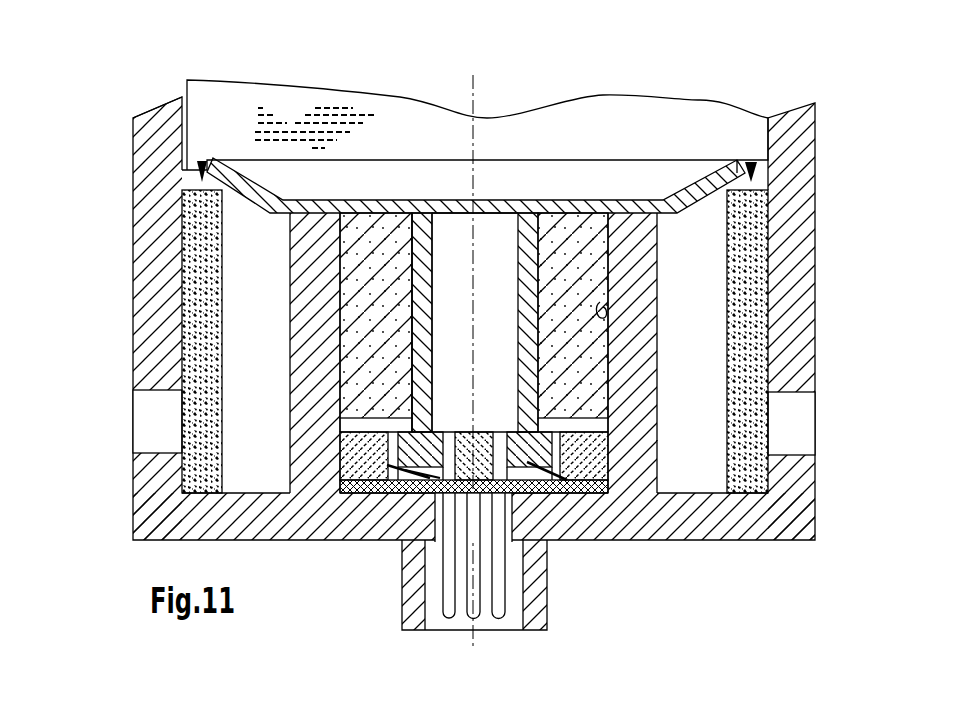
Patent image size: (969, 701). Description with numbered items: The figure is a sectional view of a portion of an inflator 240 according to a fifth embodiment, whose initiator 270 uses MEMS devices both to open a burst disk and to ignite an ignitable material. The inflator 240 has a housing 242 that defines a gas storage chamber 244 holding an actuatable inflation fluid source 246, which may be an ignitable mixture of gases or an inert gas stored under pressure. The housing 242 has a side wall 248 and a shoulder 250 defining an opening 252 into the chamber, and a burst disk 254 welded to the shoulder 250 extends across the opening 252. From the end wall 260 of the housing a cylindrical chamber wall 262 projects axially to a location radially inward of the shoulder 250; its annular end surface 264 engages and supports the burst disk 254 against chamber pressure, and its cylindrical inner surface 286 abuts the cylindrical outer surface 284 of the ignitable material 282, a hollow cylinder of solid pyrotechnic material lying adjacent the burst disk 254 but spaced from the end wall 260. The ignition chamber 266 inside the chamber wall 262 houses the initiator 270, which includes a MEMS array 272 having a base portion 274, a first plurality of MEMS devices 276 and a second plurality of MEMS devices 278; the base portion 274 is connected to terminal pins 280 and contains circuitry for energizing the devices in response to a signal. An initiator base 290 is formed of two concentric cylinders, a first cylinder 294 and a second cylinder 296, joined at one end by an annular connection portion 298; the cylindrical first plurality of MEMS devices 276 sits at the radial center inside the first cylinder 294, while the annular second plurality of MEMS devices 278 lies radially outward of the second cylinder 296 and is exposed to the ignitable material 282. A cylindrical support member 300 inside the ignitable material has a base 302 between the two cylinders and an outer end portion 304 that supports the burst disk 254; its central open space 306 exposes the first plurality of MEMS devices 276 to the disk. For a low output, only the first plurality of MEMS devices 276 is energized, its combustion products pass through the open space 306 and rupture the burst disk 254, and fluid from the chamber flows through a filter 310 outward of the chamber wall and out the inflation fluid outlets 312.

The inflator 240 is at (133, 562).
The housing 242 is at (124, 511).
The gas storage chamber 244 is at (215, 112).
The actuatable inflation fluid source 246 is at (333, 115).
The side wall 248 is at (158, 145).
The shoulder 250 is at (195, 172).
The opening 252 is at (232, 197).
The burst disk 254 is at (693, 176).
The end wall 260 is at (275, 520).
The chamber wall 262 is at (315, 263).
The annular end surface 264 is at (327, 210).
The ignition chamber 266 is at (330, 329).
The initiator 270 is at (330, 375).
The MEMS array 272 is at (642, 437).
The base portion 274 is at (567, 493).
The first plurality of MEMS devices 276 is at (494, 498).
The second plurality of MEMS devices 278 is at (340, 494).
The terminal pins 280 is at (500, 605).
The ignitable material 282 is at (567, 257).
The cylindrical outer surface 284 is at (612, 259).
The cylindrical inner surface 286 is at (604, 313).
The initiator base 290 is at (543, 505).
The first cylinder 294 is at (480, 560).
The second cylinder 296 is at (395, 482).
The annular connection portion 298 is at (415, 497).
The support member 300 is at (440, 368).
The base 302 is at (437, 432).
The outer end portion 304 is at (437, 223).
The open space 306 is at (492, 286).
The filter 310 is at (775, 318).
The inflation fluid outlets 312 is at (795, 427).